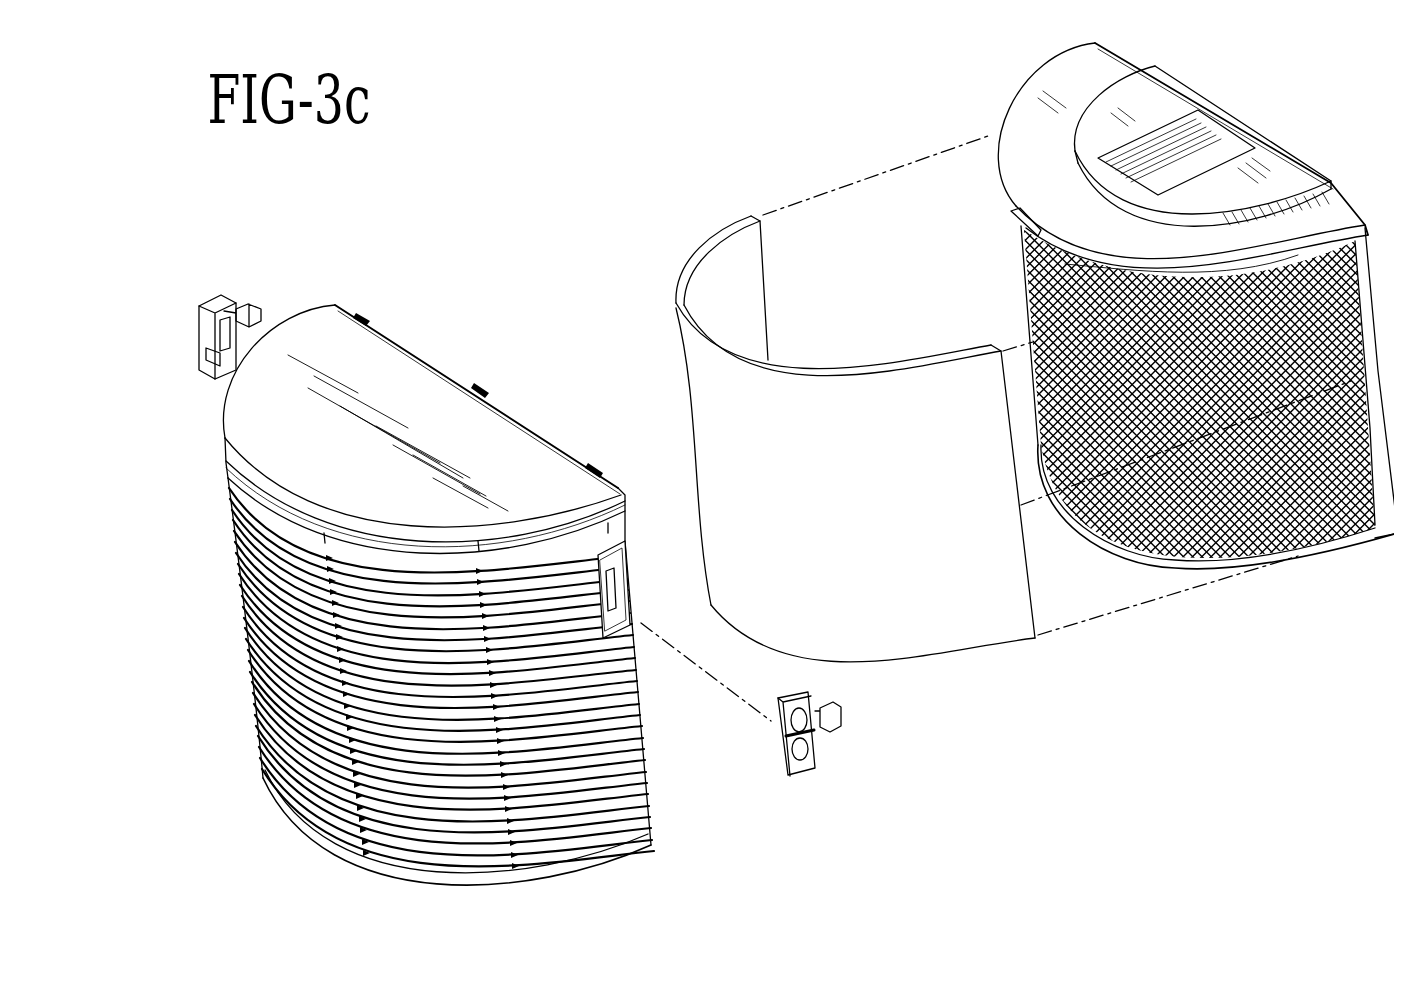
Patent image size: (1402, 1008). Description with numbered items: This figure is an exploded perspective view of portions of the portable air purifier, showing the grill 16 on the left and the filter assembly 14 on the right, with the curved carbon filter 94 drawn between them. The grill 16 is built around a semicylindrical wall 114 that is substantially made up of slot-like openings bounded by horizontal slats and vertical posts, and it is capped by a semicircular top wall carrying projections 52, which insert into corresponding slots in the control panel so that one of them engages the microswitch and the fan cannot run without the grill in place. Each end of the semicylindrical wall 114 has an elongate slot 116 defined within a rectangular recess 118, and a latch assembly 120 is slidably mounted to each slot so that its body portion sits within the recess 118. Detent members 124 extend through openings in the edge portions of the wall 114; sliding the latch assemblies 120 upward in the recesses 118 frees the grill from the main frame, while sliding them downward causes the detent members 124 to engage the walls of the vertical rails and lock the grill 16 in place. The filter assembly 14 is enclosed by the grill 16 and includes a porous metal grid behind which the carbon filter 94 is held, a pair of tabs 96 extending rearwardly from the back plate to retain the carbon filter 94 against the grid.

The filter assembly 14 is at (1184, 92).
The grill 16 is at (327, 333).
The projection 52 is at (593, 460).
The carbon filter 94 is at (913, 603).
The tabs 96 is at (1360, 350).
The semicylindrical wall 114 is at (300, 774).
The elongate slot 116 is at (606, 572).
The rectangular recess 118 is at (610, 617).
The latch assembly 120 is at (196, 293).
The detent members 124 is at (256, 292).